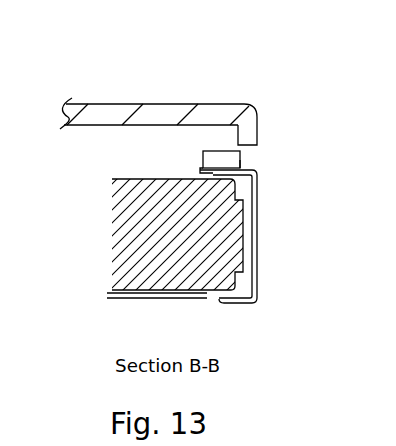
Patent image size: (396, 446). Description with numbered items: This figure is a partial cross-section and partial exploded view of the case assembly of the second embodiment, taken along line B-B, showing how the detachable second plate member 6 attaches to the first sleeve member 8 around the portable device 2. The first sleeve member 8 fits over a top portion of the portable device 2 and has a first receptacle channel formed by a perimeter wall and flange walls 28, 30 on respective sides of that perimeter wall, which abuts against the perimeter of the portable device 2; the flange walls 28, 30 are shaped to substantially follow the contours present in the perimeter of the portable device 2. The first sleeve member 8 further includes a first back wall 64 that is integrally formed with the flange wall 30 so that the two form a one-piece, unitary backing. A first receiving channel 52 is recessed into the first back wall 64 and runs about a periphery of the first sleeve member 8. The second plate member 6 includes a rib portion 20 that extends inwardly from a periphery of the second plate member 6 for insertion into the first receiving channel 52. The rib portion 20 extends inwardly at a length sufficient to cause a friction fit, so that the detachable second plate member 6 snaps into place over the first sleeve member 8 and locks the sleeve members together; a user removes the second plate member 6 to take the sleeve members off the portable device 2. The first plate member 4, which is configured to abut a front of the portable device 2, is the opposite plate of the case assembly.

The portable device 2 is at (137, 223).
The first plate member 4 is at (120, 300).
The second plate member 6 is at (229, 104).
The first sleeve member 8 is at (257, 192).
The rib portion 20 is at (243, 142).
The flange wall 28 is at (221, 304).
The flange wall 30 is at (257, 178).
The first receiving channel 52 is at (235, 163).
The first back wall 64 is at (208, 155).